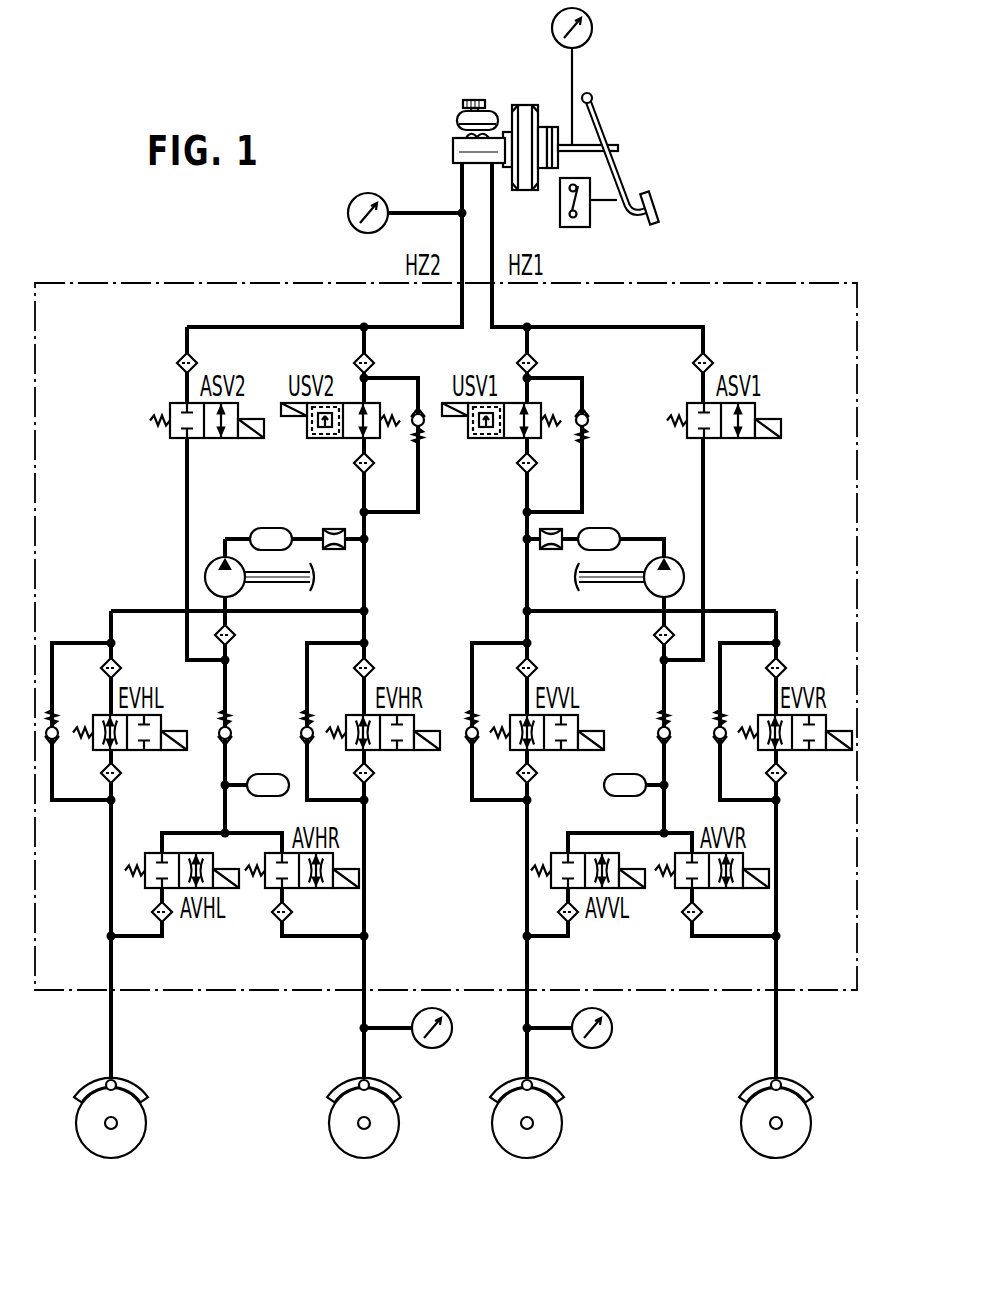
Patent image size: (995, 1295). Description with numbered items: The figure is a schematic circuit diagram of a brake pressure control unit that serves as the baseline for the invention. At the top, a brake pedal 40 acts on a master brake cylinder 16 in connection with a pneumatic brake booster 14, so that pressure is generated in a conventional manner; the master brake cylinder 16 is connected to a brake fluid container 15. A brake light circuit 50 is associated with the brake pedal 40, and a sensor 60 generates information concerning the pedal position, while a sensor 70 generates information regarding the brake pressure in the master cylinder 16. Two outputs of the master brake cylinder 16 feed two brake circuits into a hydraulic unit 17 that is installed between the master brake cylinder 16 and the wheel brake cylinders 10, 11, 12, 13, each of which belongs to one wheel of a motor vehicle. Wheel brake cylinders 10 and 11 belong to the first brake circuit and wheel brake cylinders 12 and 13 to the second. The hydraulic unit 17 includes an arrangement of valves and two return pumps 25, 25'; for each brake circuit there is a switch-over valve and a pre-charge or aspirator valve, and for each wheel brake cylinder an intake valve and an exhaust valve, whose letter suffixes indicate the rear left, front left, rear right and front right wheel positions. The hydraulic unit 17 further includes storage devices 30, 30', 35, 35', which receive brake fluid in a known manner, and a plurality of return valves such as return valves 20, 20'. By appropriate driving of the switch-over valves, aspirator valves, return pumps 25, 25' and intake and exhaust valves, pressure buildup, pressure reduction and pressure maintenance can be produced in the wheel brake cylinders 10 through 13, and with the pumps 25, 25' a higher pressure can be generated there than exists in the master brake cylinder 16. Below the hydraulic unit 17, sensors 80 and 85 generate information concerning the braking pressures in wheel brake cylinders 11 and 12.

The wheel brake cylinder 10 is at (180, 1152).
The wheel brake cylinder 11 is at (345, 1128).
The wheel brake cylinder 12 is at (508, 1127).
The wheel brake cylinder 13 is at (758, 1130).
The pneumatic brake booster 14 is at (523, 107).
The brake fluid container 15 is at (465, 115).
The master brake cylinder 16 is at (455, 143).
The hydraulic unit 17 is at (693, 283).
The return valve 20 is at (248, 697).
The return valve 20' is at (637, 697).
The return pump 25 is at (259, 541).
The return pump 25' is at (634, 541).
The storage device 30 is at (268, 752).
The storage device 30' is at (626, 752).
The storage device 35 is at (272, 507).
The storage device 35' is at (615, 505).
The brake pedal 40 is at (617, 165).
The brake light circuit 50 is at (560, 205).
The sensor 60 is at (637, 33).
The sensor 70 is at (360, 195).
The sensor 80 is at (450, 1072).
The sensor 85 is at (640, 1075).